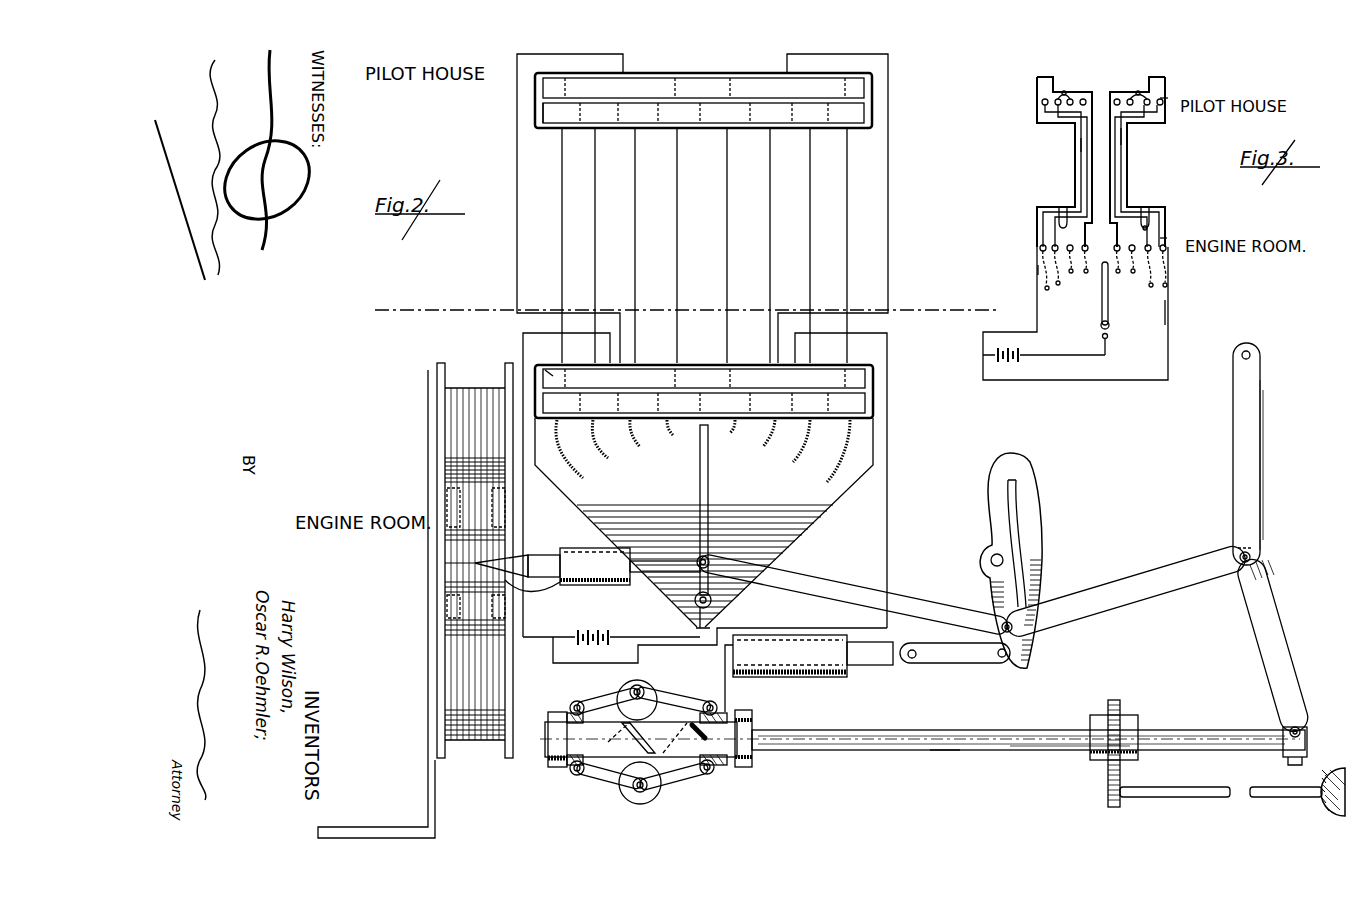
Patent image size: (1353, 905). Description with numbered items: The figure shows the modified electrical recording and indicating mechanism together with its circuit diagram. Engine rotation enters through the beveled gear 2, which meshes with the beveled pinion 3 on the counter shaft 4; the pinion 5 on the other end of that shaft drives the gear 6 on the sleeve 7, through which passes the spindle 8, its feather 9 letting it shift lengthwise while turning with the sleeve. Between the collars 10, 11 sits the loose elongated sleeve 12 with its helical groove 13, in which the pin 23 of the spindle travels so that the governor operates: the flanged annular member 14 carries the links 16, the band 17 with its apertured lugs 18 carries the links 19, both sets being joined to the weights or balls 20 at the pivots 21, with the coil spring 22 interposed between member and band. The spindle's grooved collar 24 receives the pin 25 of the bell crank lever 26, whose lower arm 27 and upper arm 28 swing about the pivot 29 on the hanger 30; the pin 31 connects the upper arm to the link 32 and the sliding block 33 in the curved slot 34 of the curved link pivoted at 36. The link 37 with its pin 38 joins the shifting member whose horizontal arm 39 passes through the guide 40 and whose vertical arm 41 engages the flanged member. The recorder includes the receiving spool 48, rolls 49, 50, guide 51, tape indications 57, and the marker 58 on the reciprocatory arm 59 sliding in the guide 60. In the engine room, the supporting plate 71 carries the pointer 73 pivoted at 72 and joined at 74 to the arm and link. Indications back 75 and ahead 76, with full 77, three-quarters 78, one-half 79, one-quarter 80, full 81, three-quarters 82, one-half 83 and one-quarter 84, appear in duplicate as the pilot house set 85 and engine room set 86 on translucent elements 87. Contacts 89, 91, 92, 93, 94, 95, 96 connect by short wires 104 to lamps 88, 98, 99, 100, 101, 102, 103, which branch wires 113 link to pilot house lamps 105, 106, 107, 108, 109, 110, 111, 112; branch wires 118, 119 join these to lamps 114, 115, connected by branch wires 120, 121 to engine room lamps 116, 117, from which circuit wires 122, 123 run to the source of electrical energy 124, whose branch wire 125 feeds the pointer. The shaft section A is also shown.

In FIG. 2, the beveled gear 2 is at (1332, 772).
In FIG. 2, the beveled pinion 3 is at (1322, 800).
In FIG. 2, the counter shaft 4 is at (1286, 803).
In FIG. 2, the pinion 5 is at (1108, 797).
In FIG. 2, the gear 6 is at (1122, 708).
In FIG. 2, the sleeve 7 is at (1090, 755).
In FIG. 2, the spindle 8 is at (922, 731).
In FIG. 2, the feather 9 is at (1040, 746).
In FIG. 2, the collar 10 is at (753, 757).
In FIG. 2, the collar 11 is at (552, 767).
In FIG. 2, the elongated sleeve 12 is at (635, 735).
In FIG. 2, the helical groove 13 is at (640, 720).
In FIG. 2, the flanged annular member 14 is at (727, 713).
In FIG. 2, the links 16 is at (700, 772).
In FIG. 2, the band 17 is at (575, 775).
In FIG. 2, the apertured lugs 18 is at (570, 705).
In FIG. 2, the links 19 is at (600, 700).
In FIG. 2, the weights or balls 20 is at (648, 688).
In FIG. 2, the pivot 21 is at (642, 685).
In FIG. 2, the coil spring 22 is at (670, 722).
In FIG. 2, the pin 23 is at (708, 740).
In FIG. 2, the grooved collar 24 is at (1283, 752).
In FIG. 2, the pin 25 is at (1300, 726).
In FIG. 2, the bell crank lever 26 is at (1270, 564).
In FIG. 2, the lower arm 27 is at (1290, 640).
In FIG. 2, the upper arm 28 is at (1172, 595).
In FIG. 2, the pivot 29 is at (1252, 552).
In FIG. 2, the hanger 30 is at (1261, 457).
In FIG. 2, the pin 31 is at (1012, 630).
In FIG. 2, the link 32 is at (845, 590).
In FIG. 2, the sliding block 33 is at (1035, 600).
In FIG. 2, the curved slot 34 is at (1015, 488).
In FIG. 2, the pivot 36 is at (990, 556).
In FIG. 2, the link 37 is at (985, 663).
In FIG. 2, the pin 38 is at (912, 660).
In FIG. 2, the horizontal arm 39 is at (870, 665).
In FIG. 2, the guide 40 is at (790, 656).
In FIG. 2, the vertical arm 41 is at (727, 688).
In FIG. 2, the receiving spool 48 is at (513, 660).
In FIG. 2, the roll 49 is at (503, 599).
In FIG. 2, the roll 50 is at (560, 620).
In FIG. 2, the guide 51 is at (505, 500).
In FIG. 2, the indications 57 is at (447, 495).
In FIG. 2, the marker 58 is at (470, 566).
In FIG. 2, the reciprocatory arm 59 is at (640, 580).
In FIG. 2, the guide 60 is at (582, 585).
In FIG. 2, the supporting plate 71 is at (850, 490).
In FIG. 2, the pivot 72 is at (712, 604).
In FIG. 2, the pointer 73 is at (712, 495).
In FIG. 2, the pivotal connection 74 is at (700, 556).
In FIG. 2, the back indication 75 is at (632, 76).
In FIG. 2, the ahead indication 76 is at (785, 76).
In FIG. 2, the full indication 77 is at (543, 106).
In FIG. 2, the three-quarters indication 78 is at (595, 130).
In FIG. 2, the one-half indication 79 is at (632, 130).
In FIG. 2, the one-quarter indication 80 is at (675, 112).
In FIG. 2, the full indication 81 is at (848, 128).
In FIG. 2, the three-quarters indication 82 is at (808, 118).
In FIG. 2, the one-half indication 83 is at (767, 115).
In FIG. 2, the one-quarter indication 84 is at (723, 118).
In FIG. 2, the pilot house indication set 85 is at (873, 78).
In FIG. 2, the engine room indication set 86 is at (873, 372).
In FIG. 2, the translucent or opaque element 87 is at (550, 372).
In FIG. 2, the contact 89 is at (822, 480).
In FIG. 2, the contact 91 is at (792, 464).
In FIG. 2, the contact 92 is at (729, 436).
In FIG. 2, the contact 93 is at (678, 438).
In FIG. 2, the contact 94 is at (644, 446).
In FIG. 2, the contact 95 is at (620, 472).
In FIG. 2, the contact 96 is at (581, 460).
In FIG. 2, the shaft section A is at (950, 750).
In FIG. 3, the lamp 88 is at (1068, 250).
In FIG. 3, the lamp 98 is at (1041, 248).
In FIG. 3, the lamp 99 is at (1053, 249).
In FIG. 3, the lamp 100 is at (1110, 275).
In FIG. 3, the lamp 101 is at (1166, 252).
In FIG. 3, the lamp 102 is at (1150, 235).
In FIG. 3, the lamp 103 is at (1165, 240).
In FIG. 3, the short wire 104 is at (1040, 270).
In FIG. 3, the lamp 105 is at (1042, 103).
In FIG. 3, the lamp 106 is at (1056, 105).
In FIG. 3, the lamp 107 is at (1072, 98).
In FIG. 3, the lamp 108 is at (1085, 98).
In FIG. 3, the lamp 109 is at (1118, 98).
In FIG. 3, the lamp 110 is at (1148, 98).
In FIG. 3, the lamp 111 is at (1163, 100).
In FIG. 3, the lamp 112 is at (1168, 100).
In FIG. 3, the branch wires 113 is at (1081, 153).
In FIG. 3, the lamp 114 is at (1064, 92).
In FIG. 3, the lamp 115 is at (1140, 92).
In FIG. 3, the lamp 116 is at (1059, 220).
In FIG. 3, the lamp 117 is at (1150, 212).
In FIG. 3, the branch wires 118 is at (1062, 91).
In FIG. 3, the branch wires 119 is at (1138, 95).
In FIG. 3, the branch wire 120 is at (1082, 145).
In FIG. 3, the branch wire 121 is at (1122, 136).
In FIG. 3, the circuit wire 122 is at (1035, 307).
In FIG. 3, the circuit wire 123 is at (1170, 313).
In FIG. 3, the source of electrical energy 124 is at (1008, 365).
In FIG. 3, the branch wire 125 is at (1068, 345).